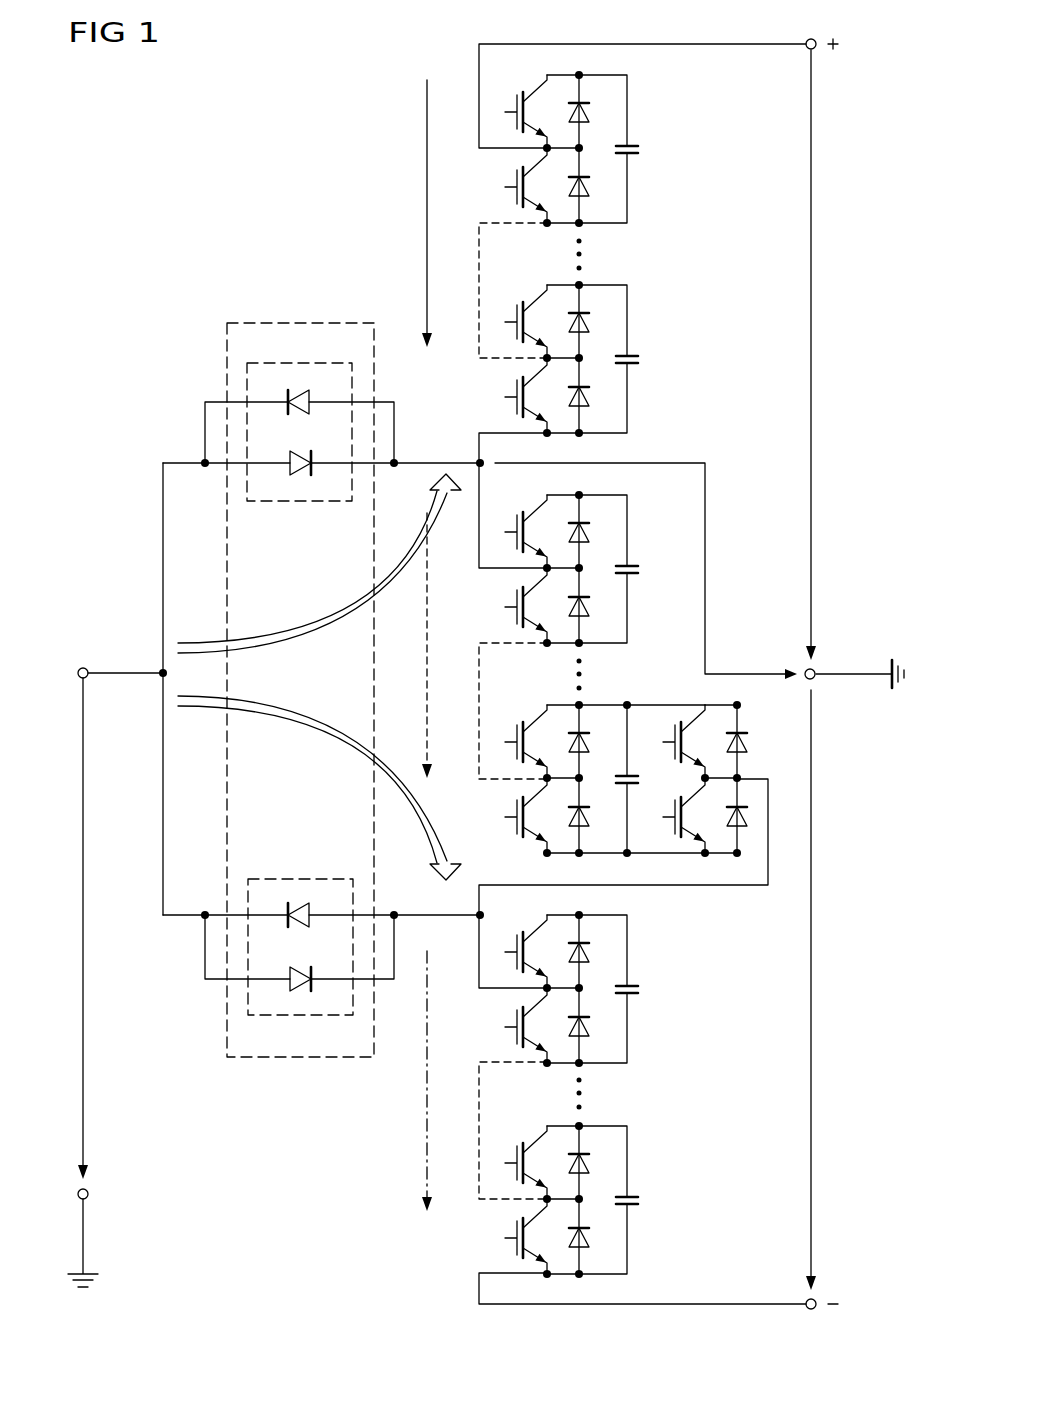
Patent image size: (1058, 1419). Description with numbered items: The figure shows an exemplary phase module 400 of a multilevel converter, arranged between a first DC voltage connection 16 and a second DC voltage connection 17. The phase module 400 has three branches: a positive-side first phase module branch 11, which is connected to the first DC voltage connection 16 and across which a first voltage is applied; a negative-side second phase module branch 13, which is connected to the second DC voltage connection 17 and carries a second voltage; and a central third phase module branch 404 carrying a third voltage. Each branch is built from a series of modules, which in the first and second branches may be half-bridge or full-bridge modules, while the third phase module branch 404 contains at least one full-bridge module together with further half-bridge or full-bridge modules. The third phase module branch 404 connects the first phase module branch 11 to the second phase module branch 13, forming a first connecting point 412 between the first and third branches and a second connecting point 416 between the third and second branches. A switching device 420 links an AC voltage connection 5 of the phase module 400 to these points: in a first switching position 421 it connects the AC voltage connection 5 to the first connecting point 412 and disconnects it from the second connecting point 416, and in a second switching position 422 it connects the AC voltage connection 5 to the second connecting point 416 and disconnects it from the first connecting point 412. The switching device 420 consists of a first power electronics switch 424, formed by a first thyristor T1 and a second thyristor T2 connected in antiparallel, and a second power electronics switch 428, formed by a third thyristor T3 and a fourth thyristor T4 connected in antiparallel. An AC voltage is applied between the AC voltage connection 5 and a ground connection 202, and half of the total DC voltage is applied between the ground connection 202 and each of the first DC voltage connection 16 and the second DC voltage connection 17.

The phase module 400 is at (272, 130).
The AC voltage connection 5 is at (83, 666).
The first phase module branch 11 is at (573, 254).
The second phase module branch 13 is at (573, 1111).
The first DC voltage connection 16 is at (815, 48).
The second DC voltage connection 17 is at (820, 1298).
The ground connection 202 is at (815, 680).
The third phase module branch 404 is at (596, 716).
The first connecting point 412 is at (477, 461).
The second connecting point 416 is at (477, 913).
The switching device 420 is at (227, 550).
The first switching position 421 is at (320, 618).
The second switching position 422 is at (320, 735).
The first power electronics switch 424 is at (317, 422).
The second power electronics switch 428 is at (317, 964).
The first thyristor T1 is at (302, 392).
The second thyristor T2 is at (298, 476).
The third thyristor T3 is at (302, 903).
The fourth thyristor T4 is at (298, 991).